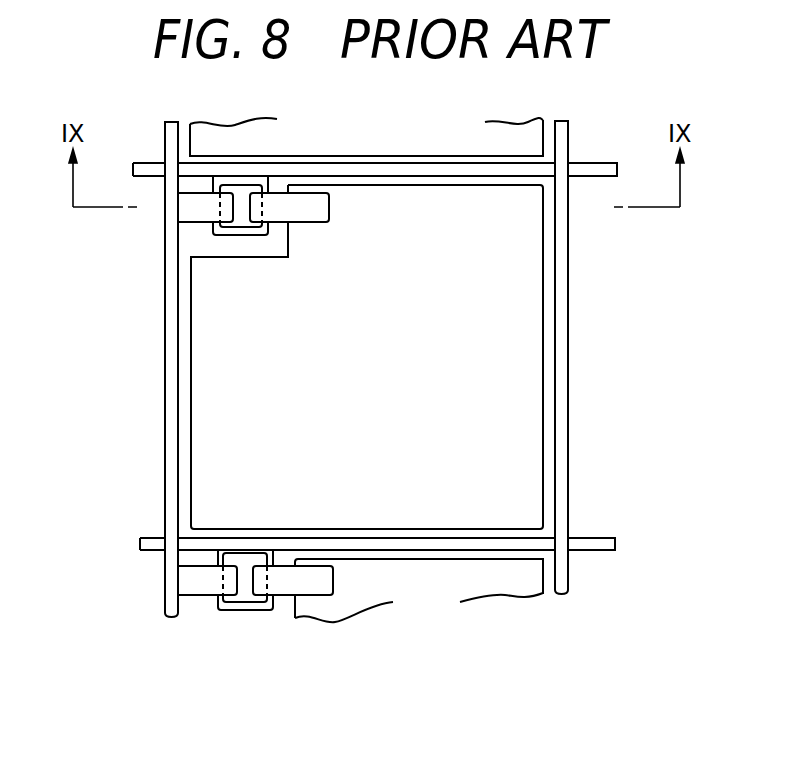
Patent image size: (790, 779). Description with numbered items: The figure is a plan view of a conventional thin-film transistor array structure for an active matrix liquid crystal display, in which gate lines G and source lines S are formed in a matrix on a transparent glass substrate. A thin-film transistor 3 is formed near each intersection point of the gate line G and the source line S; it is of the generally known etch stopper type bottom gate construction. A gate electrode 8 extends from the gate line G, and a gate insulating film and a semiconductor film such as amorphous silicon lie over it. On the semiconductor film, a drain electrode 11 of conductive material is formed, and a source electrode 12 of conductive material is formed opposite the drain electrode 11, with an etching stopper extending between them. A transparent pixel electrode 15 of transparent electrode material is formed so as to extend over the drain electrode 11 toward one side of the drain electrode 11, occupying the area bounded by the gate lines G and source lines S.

The thin-film transistor 3 is at (254, 246).
The gate electrode 8 is at (218, 237).
The drain electrode 11 is at (310, 223).
The source electrode 12 is at (192, 224).
The transparent pixel electrode 15 is at (517, 455).
The gate line G is at (428, 170).
The source line S is at (172, 368).